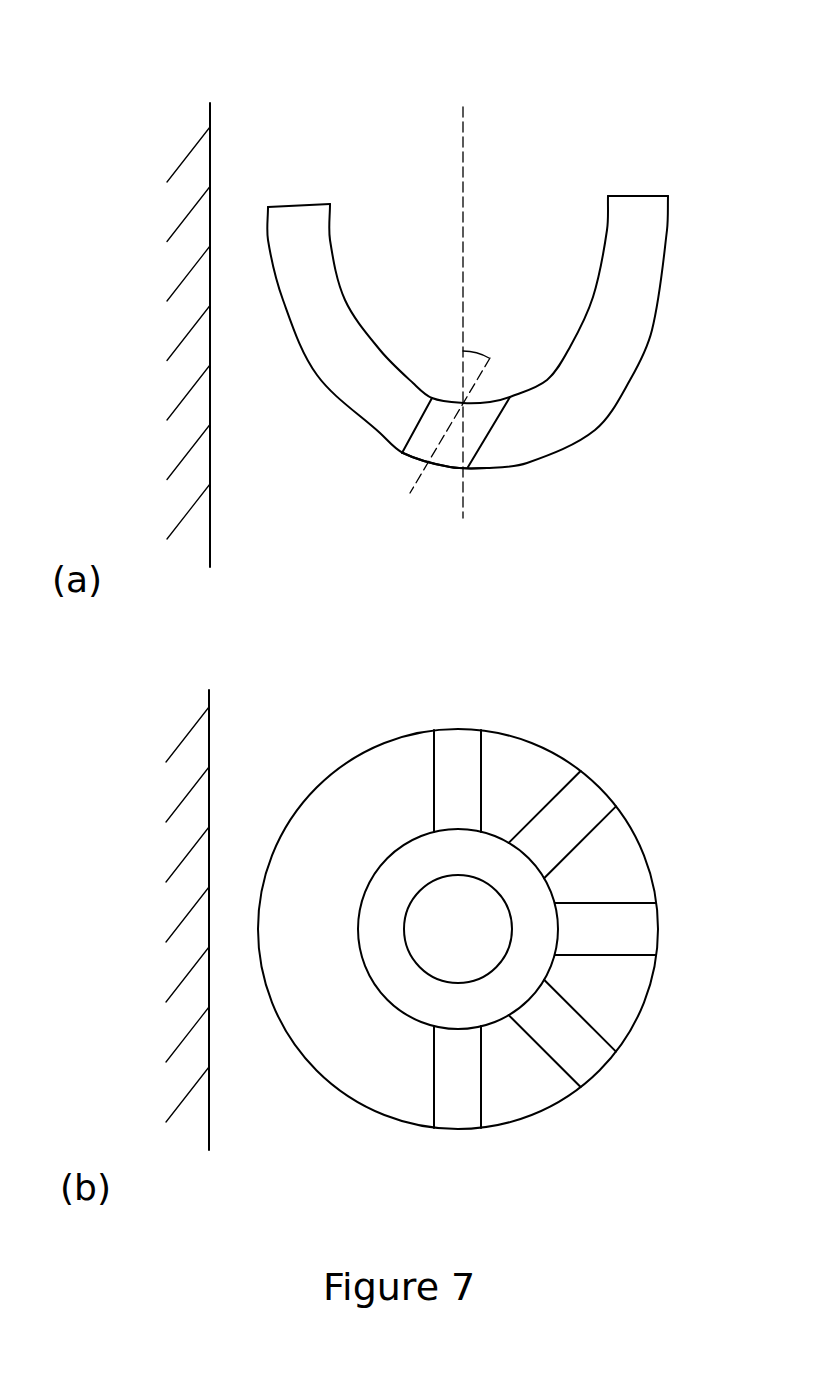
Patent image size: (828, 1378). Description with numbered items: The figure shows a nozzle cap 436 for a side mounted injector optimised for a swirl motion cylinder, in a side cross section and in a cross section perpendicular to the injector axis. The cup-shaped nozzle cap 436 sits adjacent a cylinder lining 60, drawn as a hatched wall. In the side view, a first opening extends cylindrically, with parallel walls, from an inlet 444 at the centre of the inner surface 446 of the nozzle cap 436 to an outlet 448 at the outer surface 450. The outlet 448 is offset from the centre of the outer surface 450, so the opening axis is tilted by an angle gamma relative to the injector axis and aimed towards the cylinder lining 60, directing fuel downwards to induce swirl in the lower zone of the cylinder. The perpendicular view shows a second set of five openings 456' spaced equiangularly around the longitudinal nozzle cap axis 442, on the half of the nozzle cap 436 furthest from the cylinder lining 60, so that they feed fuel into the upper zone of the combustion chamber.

The nozzle cap 436 is at (440, 289).
The longitudinal nozzle cap axis 442 is at (403, 285).
The inlet 444 is at (442, 397).
The inner surface 446 is at (593, 297).
The outlet 448 is at (450, 468).
The outer surface 450 is at (315, 375).
The second set openings 456' is at (564, 932).
The cylinder lining 60 is at (210, 515).